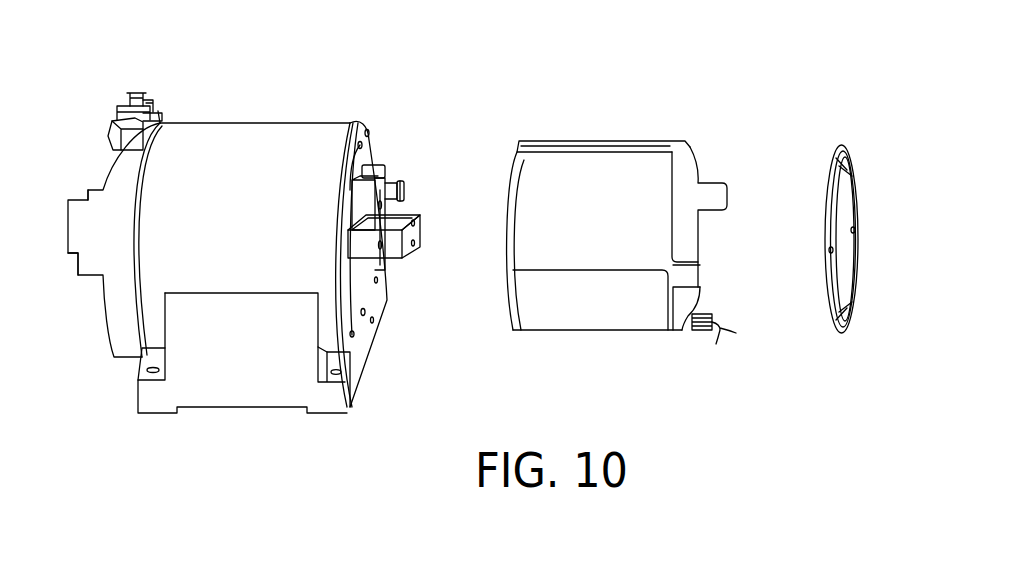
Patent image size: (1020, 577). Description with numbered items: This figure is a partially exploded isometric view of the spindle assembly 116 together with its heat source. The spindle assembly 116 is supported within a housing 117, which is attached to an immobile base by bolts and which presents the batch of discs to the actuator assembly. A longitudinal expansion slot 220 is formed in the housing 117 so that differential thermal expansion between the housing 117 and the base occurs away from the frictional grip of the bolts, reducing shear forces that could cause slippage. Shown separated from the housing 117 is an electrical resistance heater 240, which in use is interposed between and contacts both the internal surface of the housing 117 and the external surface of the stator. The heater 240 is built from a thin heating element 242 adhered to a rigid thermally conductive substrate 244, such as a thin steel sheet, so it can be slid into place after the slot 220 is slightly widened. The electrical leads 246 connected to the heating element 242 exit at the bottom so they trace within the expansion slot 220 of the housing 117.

The spindle assembly 116 is at (360, 155).
The housing 117 is at (208, 123).
The longitudinal expansion slot 220 is at (368, 335).
The electrical resistance heater 240 is at (626, 221).
The heating element 242 is at (587, 318).
The rigid thermally conductive substrate 244 is at (653, 141).
The electrical leads 246 is at (727, 334).